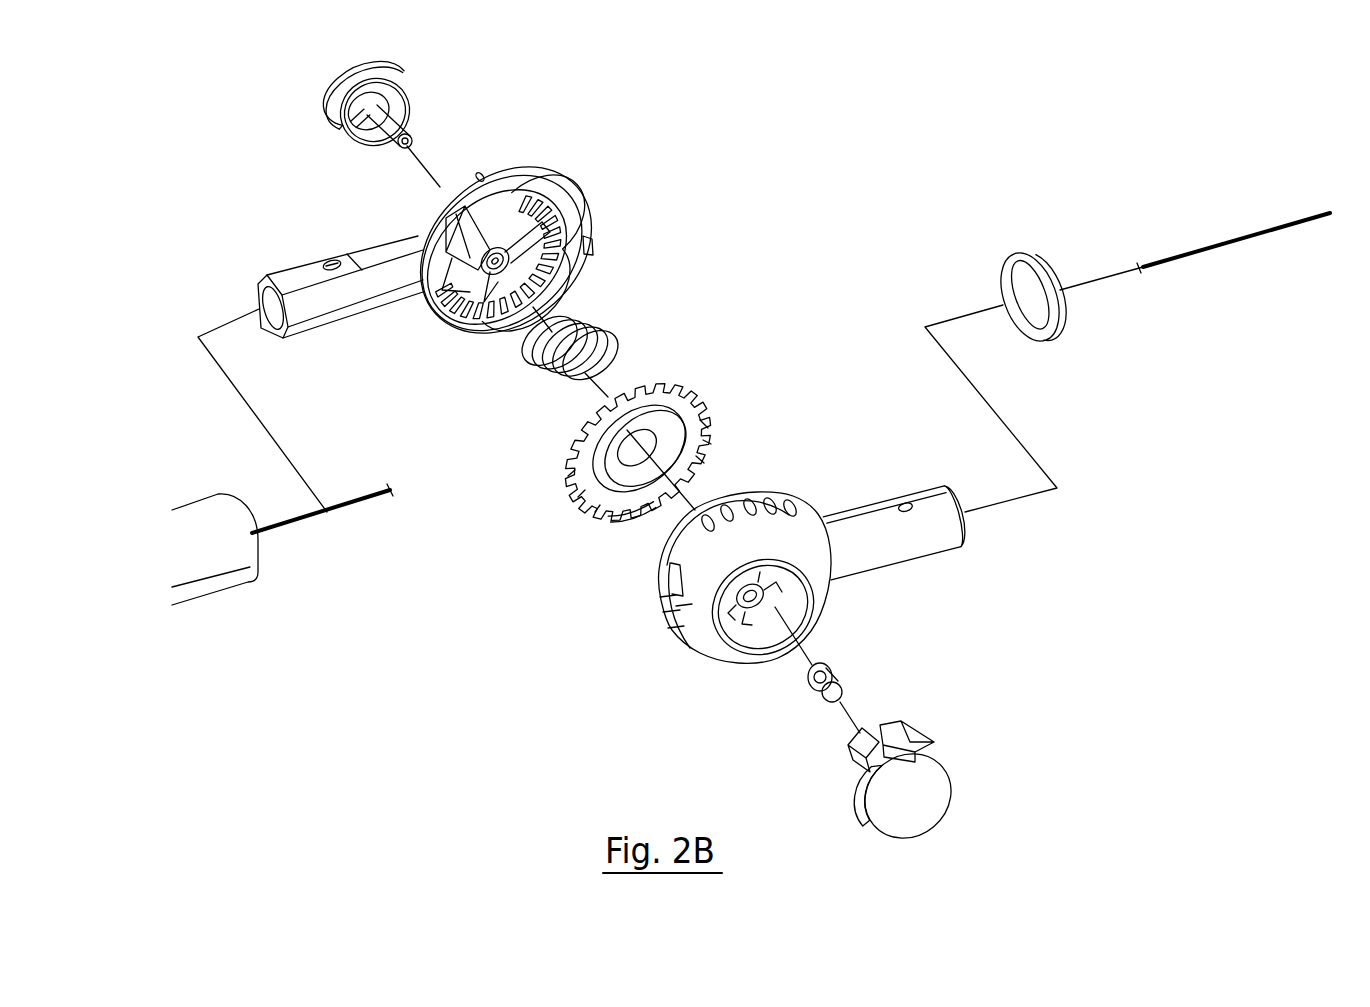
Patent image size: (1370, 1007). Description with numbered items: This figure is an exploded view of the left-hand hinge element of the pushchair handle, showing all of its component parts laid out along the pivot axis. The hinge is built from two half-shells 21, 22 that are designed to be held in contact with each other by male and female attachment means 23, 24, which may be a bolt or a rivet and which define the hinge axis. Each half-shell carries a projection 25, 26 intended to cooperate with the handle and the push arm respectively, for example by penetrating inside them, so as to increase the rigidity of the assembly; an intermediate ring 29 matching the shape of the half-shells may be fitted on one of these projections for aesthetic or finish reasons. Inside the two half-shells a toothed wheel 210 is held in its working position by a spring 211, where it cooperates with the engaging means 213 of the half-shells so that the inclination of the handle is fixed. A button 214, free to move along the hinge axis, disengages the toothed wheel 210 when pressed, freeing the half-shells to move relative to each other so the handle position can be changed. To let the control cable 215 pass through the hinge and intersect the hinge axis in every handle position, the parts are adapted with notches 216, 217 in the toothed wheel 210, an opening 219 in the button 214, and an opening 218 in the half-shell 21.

The half-shell 21 is at (780, 497).
The half-shell 22 is at (503, 172).
The male attachment means 23 is at (845, 679).
The female attachment means 24 is at (343, 145).
The projection 25 is at (917, 525).
The projection 26 is at (370, 283).
The intermediate ring 29 is at (1030, 257).
The toothed wheel 210 is at (670, 387).
The spring 211 is at (547, 370).
The means of engaging 213 is at (593, 252).
The button 214 is at (923, 777).
The control cable 215 is at (324, 513).
The notch 216 is at (698, 432).
The notch 217 is at (572, 473).
The opening 218 is at (660, 610).
The opening 219 is at (860, 773).